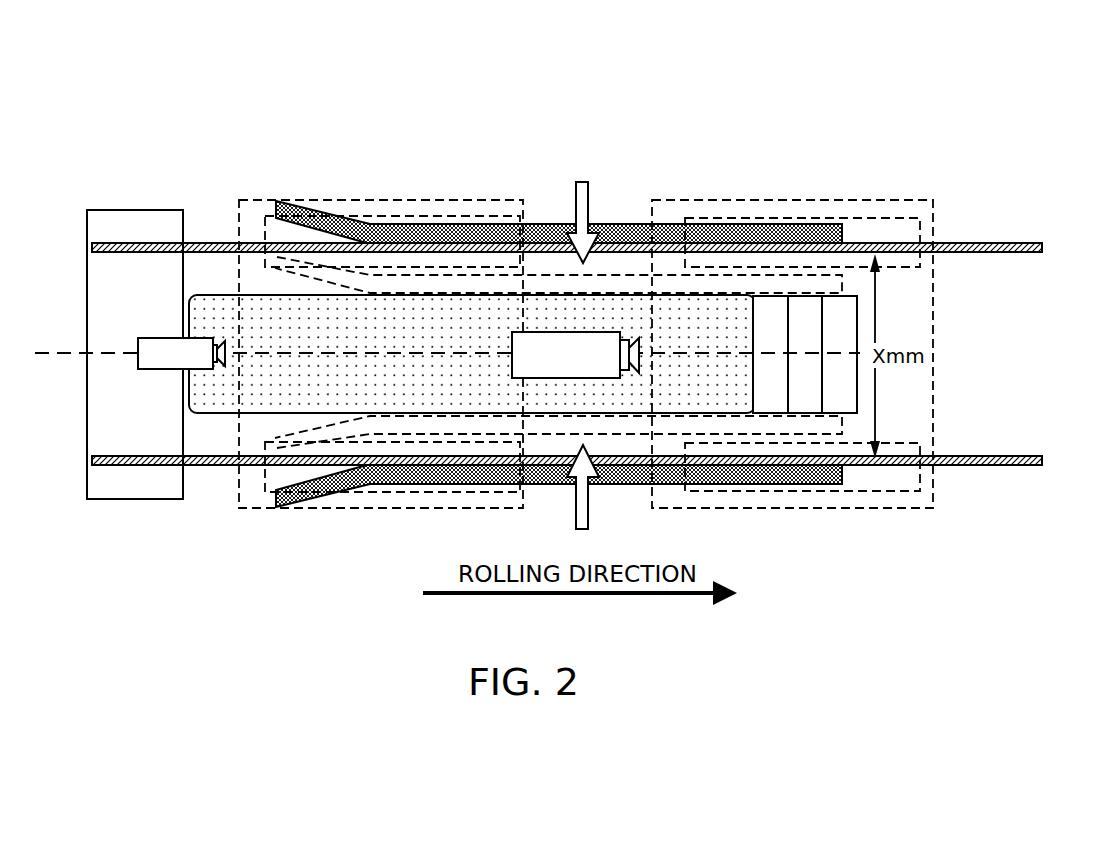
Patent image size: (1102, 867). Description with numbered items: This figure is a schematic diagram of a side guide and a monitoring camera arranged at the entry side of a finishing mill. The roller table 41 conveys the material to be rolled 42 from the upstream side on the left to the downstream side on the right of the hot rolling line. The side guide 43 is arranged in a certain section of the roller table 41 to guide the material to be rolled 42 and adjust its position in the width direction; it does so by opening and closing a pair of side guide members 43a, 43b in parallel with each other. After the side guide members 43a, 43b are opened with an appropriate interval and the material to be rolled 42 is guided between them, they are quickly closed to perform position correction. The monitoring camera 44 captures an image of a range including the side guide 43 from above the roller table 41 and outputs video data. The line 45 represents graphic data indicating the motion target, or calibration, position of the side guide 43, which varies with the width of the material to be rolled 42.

The roller table 41 is at (843, 321).
The material to be rolled 42 is at (215, 306).
The side guide 43 is at (627, 131).
The side guide member 43a is at (629, 226).
The side guide member 43b is at (812, 484).
The monitoring camera 44 is at (152, 338).
The line 45 is at (983, 243).